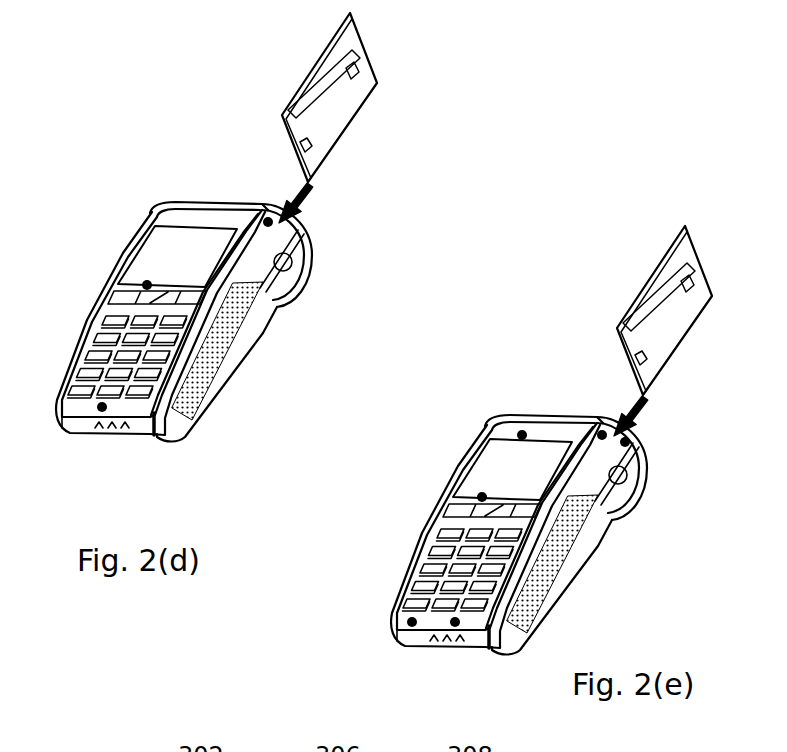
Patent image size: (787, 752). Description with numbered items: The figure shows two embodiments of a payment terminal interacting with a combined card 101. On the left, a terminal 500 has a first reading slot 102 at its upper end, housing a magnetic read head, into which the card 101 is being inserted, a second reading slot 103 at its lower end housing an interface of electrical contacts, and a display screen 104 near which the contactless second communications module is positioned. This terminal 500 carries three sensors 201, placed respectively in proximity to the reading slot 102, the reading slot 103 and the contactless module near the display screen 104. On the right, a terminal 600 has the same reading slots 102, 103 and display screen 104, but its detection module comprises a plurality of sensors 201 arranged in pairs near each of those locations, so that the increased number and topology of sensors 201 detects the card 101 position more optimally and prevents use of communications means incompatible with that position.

In FIG. 2D, the combined card 101 is at (335, 145).
In FIG. 2E, the combined card 101 is at (642, 275).
In FIG. 2D, the first reading slot 102 is at (303, 230).
In FIG. 2E, the first reading slot 102 is at (640, 447).
In FIG. 2D, the second reading slot 103 is at (125, 440).
In FIG. 2E, the second reading slot 103 is at (460, 648).
In FIG. 2D, the display screen 104 is at (182, 235).
In FIG. 2E, the display screen 104 is at (532, 455).
In FIG. 2D, the sensors 201 is at (147, 285).
In FIG. 2E, the sensors 201 is at (522, 435).
In FIG. 2D, the terminal 500 is at (112, 262).
In FIG. 2E, the terminal 600 is at (440, 490).